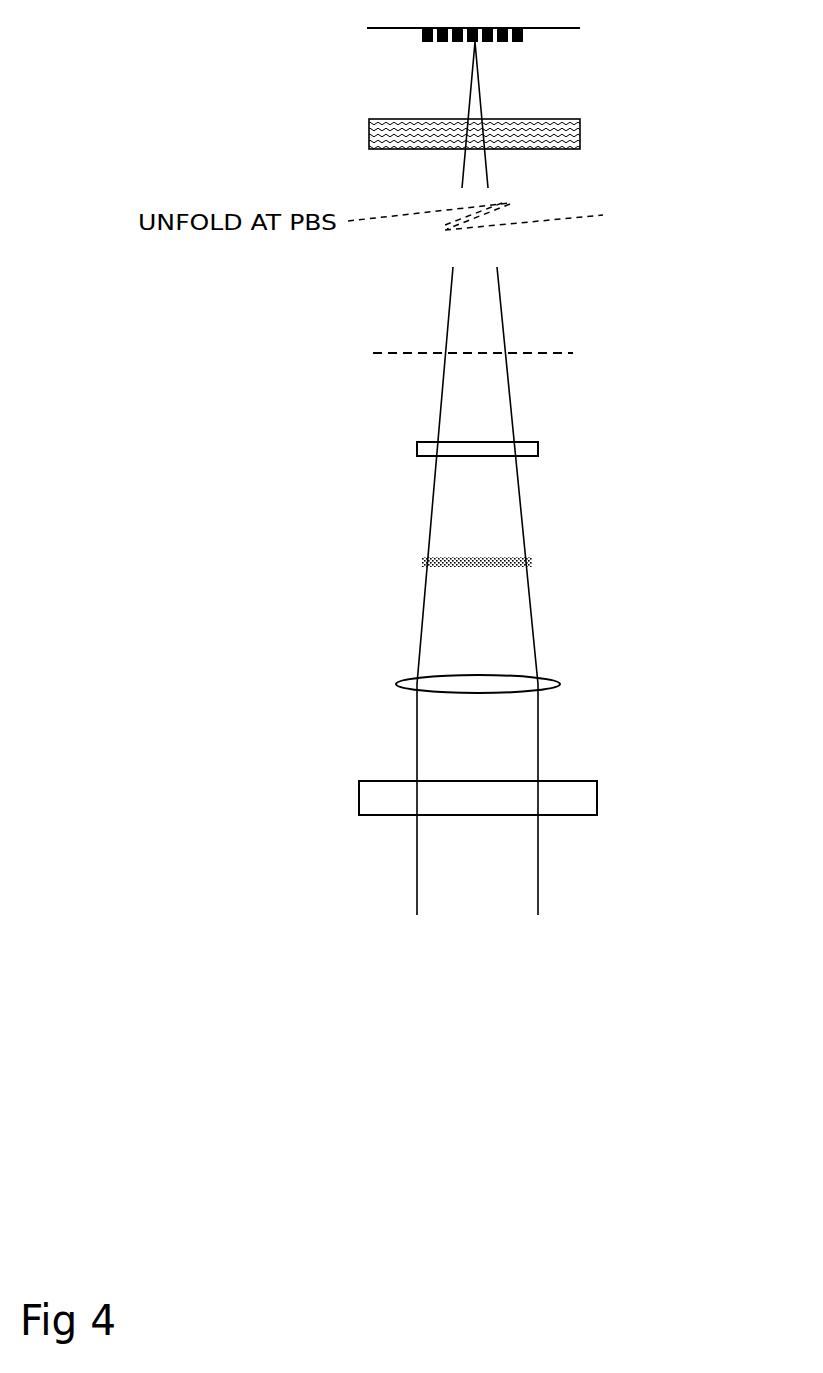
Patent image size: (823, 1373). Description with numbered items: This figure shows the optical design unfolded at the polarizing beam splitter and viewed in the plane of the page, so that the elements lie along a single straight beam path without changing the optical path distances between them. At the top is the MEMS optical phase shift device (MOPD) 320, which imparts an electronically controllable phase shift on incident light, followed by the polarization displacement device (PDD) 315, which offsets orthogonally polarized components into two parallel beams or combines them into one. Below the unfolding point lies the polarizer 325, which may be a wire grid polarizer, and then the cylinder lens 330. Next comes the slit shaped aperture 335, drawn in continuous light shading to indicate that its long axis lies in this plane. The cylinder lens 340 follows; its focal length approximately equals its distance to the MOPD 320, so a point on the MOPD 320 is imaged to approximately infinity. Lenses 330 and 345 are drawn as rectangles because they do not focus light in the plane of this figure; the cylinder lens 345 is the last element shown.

The MEMS optical phase shift device 320 is at (555, 40).
The polarization displacement device 315 is at (587, 127).
The polarizer 325 is at (580, 343).
The cylinder lens 330 is at (543, 439).
The slit shaped aperture 335 is at (548, 559).
The cylinder lens 340 is at (555, 675).
The cylinder lens 345 is at (605, 781).